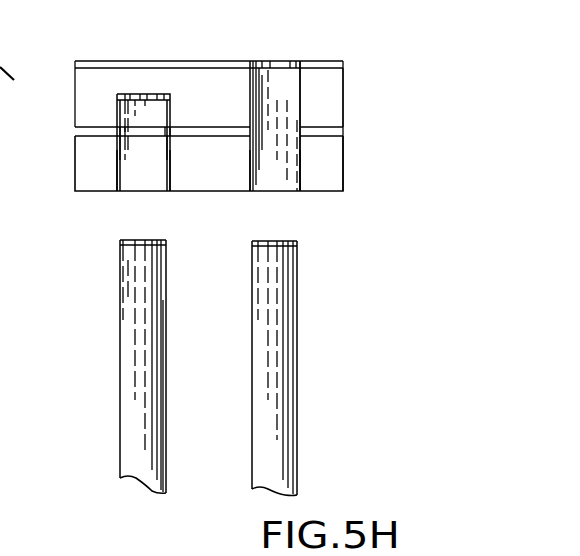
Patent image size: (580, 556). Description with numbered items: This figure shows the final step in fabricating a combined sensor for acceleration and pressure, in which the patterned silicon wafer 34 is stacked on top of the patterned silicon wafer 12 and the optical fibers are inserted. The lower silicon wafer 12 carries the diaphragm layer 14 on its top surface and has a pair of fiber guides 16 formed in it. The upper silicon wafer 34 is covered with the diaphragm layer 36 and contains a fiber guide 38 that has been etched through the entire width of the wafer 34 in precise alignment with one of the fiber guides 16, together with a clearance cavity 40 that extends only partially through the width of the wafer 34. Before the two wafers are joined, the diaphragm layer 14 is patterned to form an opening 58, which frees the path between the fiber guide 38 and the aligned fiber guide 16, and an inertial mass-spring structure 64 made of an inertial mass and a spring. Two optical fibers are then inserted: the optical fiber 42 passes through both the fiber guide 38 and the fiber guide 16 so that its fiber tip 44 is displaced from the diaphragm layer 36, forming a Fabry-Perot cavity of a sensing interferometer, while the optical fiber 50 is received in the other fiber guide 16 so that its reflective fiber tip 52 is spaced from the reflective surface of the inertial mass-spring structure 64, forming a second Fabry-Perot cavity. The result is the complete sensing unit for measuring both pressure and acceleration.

The silicon wafer 12 is at (87, 168).
The diaphragm layer 14 is at (88, 131).
The fiber guides 16 is at (143, 177).
The silicon wafer 34 is at (88, 95).
The diaphragm layer 36 is at (87, 65).
The fiber guide 38 is at (277, 87).
The clearance cavity 40 is at (143, 108).
The optical fiber 42 is at (268, 427).
The fiber tip 44 is at (275, 237).
The optical fiber 50 is at (135, 427).
The fiber tip 52 is at (118, 240).
The opening 58 is at (282, 65).
The inertial mass-spring structure 64 is at (145, 141).